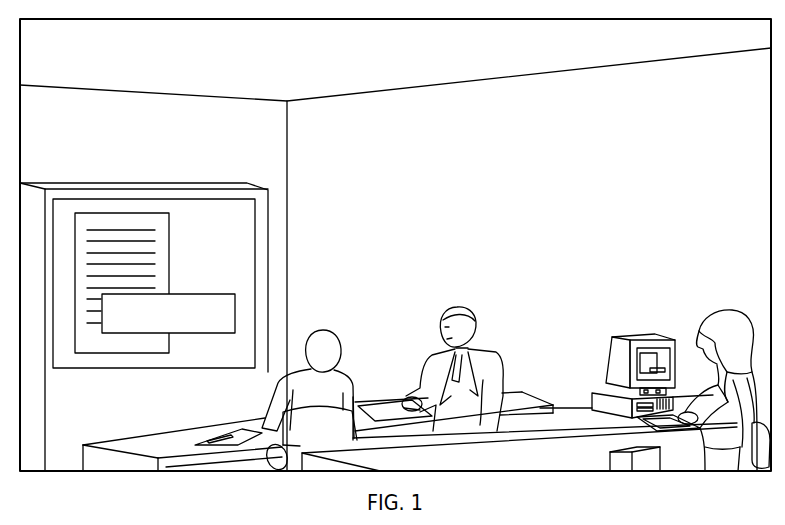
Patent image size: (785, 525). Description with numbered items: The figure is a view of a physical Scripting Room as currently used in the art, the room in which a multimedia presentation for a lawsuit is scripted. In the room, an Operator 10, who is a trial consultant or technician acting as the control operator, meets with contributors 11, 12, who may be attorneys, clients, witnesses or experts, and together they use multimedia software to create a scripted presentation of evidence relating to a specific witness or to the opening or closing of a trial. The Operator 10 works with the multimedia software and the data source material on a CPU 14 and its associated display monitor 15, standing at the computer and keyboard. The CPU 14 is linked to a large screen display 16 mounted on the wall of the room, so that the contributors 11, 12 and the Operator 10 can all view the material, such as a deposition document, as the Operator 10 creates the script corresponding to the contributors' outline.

The Operator 10 is at (727, 309).
The contributor 11 is at (459, 308).
The contributor 12 is at (330, 330).
The CPU 14 is at (633, 452).
The display monitor 15 is at (661, 342).
The large screen display 16 is at (121, 213).